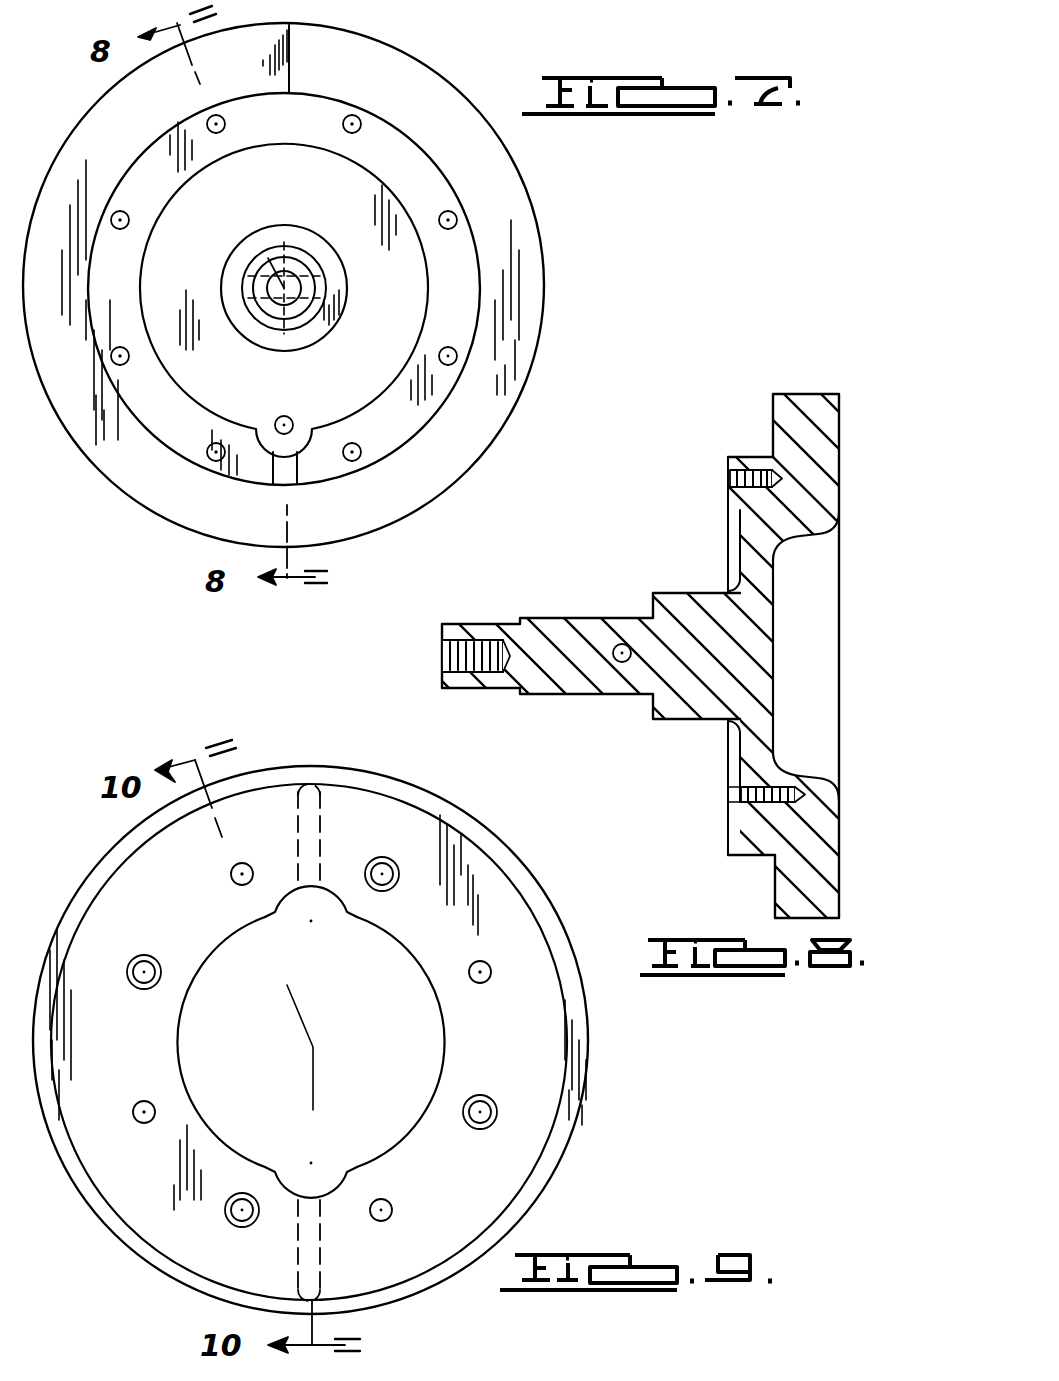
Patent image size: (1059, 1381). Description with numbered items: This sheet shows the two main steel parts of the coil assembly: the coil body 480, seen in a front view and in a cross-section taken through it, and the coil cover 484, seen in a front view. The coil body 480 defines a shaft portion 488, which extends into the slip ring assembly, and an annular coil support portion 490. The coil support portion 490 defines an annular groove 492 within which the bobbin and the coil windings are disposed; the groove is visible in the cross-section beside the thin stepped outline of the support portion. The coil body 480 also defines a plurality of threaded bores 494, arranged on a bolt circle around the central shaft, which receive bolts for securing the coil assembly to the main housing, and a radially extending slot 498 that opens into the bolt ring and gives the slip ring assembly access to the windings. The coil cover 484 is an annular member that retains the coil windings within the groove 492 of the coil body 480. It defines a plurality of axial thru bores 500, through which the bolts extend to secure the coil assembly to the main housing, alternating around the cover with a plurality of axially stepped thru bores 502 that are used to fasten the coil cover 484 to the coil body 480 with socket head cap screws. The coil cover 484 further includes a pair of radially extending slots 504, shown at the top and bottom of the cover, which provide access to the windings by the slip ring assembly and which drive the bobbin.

In FIG. 7, the coil body 480 is at (474, 72).
In FIG. 8, the coil body 480 is at (716, 412).
In FIG. 9, the coil cover 484 is at (478, 812).
In FIG. 7, the shaft portion 488 is at (287, 258).
In FIG. 8, the shaft portion 488 is at (574, 616).
In FIG. 8, the annular coil support portion 490 is at (796, 897).
In FIG. 8, the annular groove 492 is at (776, 878).
In FIG. 7, the threaded bores 494 is at (440, 355).
In FIG. 8, the threaded bores 494 is at (730, 478).
In FIG. 7, the radially extending slot 498 is at (283, 480).
In FIG. 8, the radially extending slot 498 is at (735, 825).
In FIG. 9, the axial thru bores 500 is at (380, 1198).
In FIG. 9, the axially stepped thru bores 502 is at (381, 892).
In FIG. 9, the radially extending slots 504 is at (325, 808).